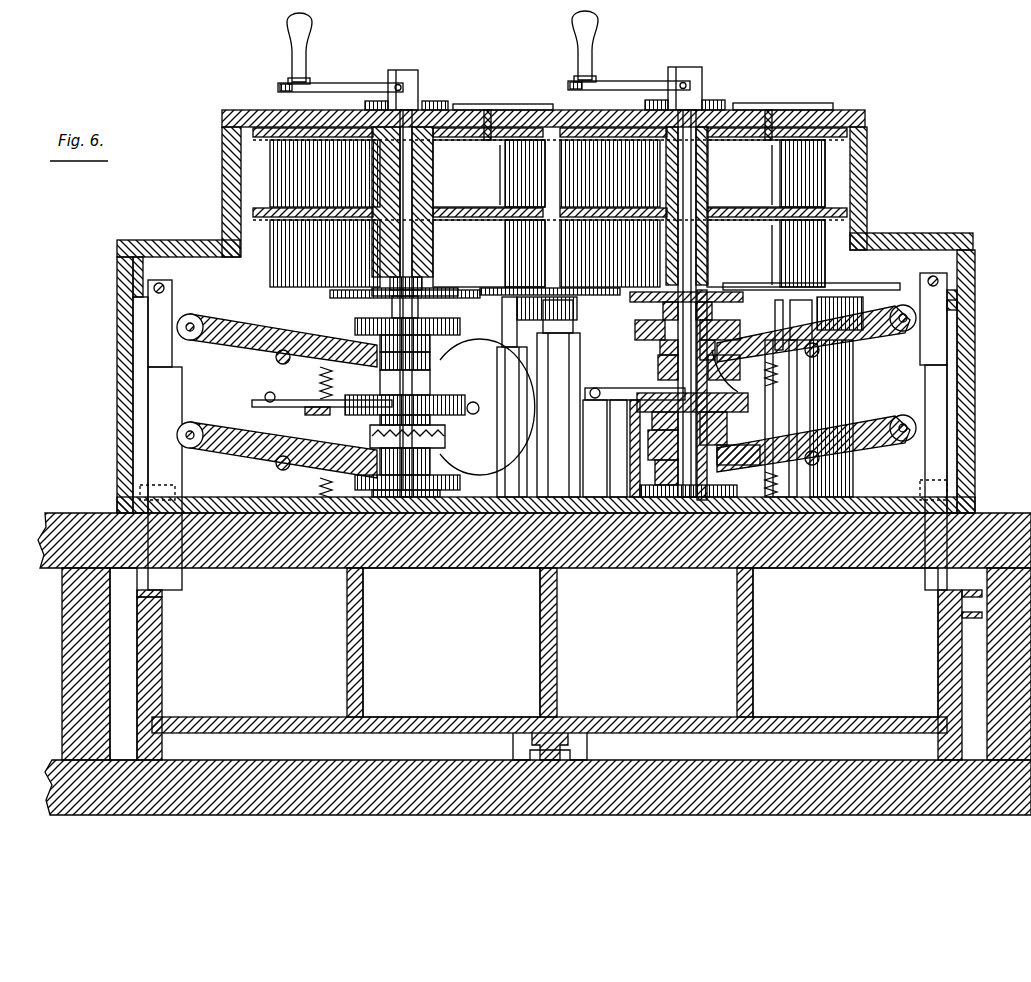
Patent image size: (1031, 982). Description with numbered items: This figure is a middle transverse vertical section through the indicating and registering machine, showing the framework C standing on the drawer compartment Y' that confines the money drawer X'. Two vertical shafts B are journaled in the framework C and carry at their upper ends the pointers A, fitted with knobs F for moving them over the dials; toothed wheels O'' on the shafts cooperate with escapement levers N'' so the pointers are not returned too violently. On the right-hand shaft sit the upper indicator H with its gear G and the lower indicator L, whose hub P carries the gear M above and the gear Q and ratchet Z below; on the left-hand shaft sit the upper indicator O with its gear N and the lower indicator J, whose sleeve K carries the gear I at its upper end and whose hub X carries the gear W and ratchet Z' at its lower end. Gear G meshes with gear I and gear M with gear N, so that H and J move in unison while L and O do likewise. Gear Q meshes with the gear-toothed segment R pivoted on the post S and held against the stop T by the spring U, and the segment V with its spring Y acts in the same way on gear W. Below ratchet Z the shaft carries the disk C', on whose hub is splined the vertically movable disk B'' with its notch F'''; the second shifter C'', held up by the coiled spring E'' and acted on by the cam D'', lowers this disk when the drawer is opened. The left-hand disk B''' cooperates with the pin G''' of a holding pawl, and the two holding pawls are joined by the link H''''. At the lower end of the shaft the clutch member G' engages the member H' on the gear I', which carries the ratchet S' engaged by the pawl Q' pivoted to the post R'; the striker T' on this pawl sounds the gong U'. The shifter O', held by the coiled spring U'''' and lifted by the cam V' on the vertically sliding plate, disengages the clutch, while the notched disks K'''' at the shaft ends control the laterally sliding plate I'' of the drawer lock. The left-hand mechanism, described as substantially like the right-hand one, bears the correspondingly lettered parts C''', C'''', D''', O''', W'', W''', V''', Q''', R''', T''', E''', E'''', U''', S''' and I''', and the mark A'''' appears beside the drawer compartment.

The framework C is at (563, 325).
The money drawer X' is at (534, 664).
The base or compartment Y' is at (590, 642).
The bracket A'''' is at (119, 595).
The link H'''' is at (671, 514).
The vertical shafts B is at (474, 213).
The gear I is at (489, 173).
The upper left-hand indicator O is at (487, 175).
The hub or sleeve K is at (425, 303).
The gear G is at (766, 173).
The upper right-hand indicator H is at (753, 175).
The gear M is at (772, 218).
The hub P is at (705, 252).
The gear Q is at (747, 274).
The gear-toothed segment R is at (772, 274).
The lower right-hand indicator L is at (818, 245).
The hub X is at (467, 255).
The gear N is at (485, 234).
The lower left-hand indicator J is at (462, 263).
The gear W is at (405, 281).
The segment V is at (550, 278).
The knobs F is at (454, 47).
The pointers A is at (475, 84).
The toothed wheels O'' is at (553, 92).
The escapement levers N'' is at (643, 107).
The ratchet Z is at (686, 303).
The disk C' is at (688, 321).
The coiled spring E'' is at (673, 338).
The vertically movable disk B'' is at (705, 359).
The laterally sliding plate I'' is at (683, 358).
The pawl Q' is at (666, 388).
The ratchet S' is at (703, 403).
The stop T is at (724, 321).
The second shifter C'' is at (734, 348).
The gong U' is at (722, 395).
The clutch member H' is at (725, 427).
The shifter O' is at (738, 445).
The clutch member G' is at (660, 457).
The gear I' is at (625, 448).
The post R' is at (600, 442).
The disks K'''' is at (546, 505).
The striker T' is at (692, 529).
The coiled spring U'''' is at (763, 504).
The spring U is at (811, 281).
The post S is at (831, 321).
The cylinder E'''' is at (809, 418).
The cam D'' is at (937, 431).
The cam or shoulder V' is at (913, 385).
The wall W'' is at (998, 405).
The lever arm C'''' is at (609, 389).
The slide bar D''' is at (157, 435).
The lever arm C''' is at (277, 336).
The lever arm O''' is at (277, 450).
The bar W''' is at (197, 387).
The pivot V''' is at (165, 455).
The rod Q''' is at (322, 409).
The block R''' is at (311, 417).
The spring T''' is at (312, 383).
The disk E''' is at (387, 372).
The spring U''' is at (295, 485).
The ratchet Z' is at (387, 303).
The notch F''' is at (390, 331).
The disk B''' is at (385, 350).
The gear S''' is at (440, 407).
The pin G''' is at (389, 450).
The wheel I''' is at (431, 457).
The spring Y is at (525, 397).